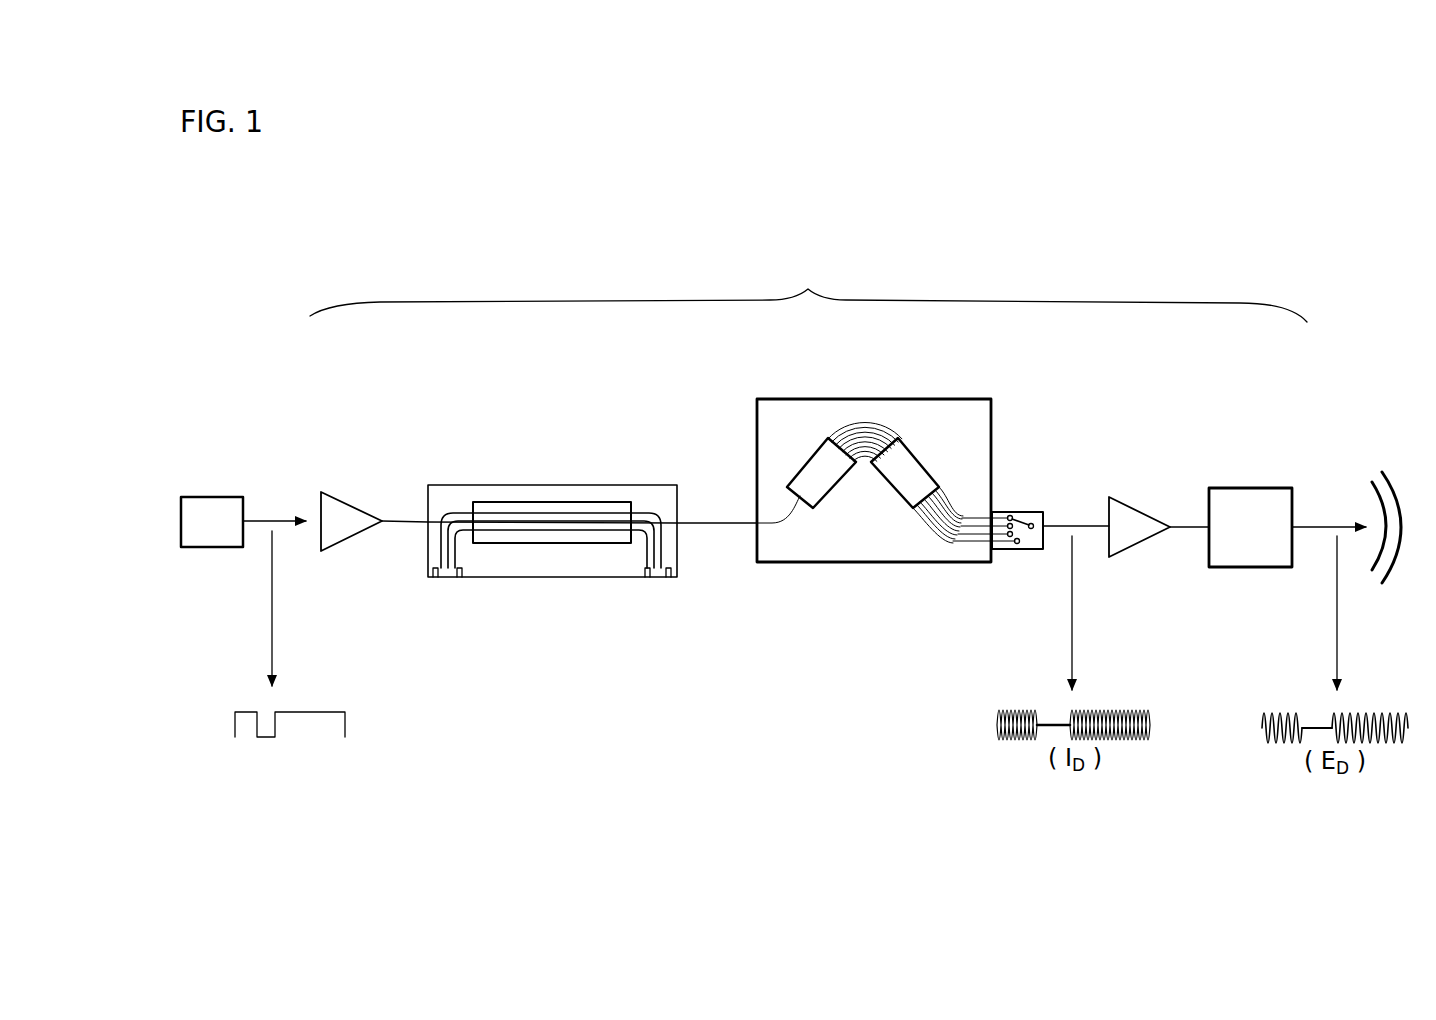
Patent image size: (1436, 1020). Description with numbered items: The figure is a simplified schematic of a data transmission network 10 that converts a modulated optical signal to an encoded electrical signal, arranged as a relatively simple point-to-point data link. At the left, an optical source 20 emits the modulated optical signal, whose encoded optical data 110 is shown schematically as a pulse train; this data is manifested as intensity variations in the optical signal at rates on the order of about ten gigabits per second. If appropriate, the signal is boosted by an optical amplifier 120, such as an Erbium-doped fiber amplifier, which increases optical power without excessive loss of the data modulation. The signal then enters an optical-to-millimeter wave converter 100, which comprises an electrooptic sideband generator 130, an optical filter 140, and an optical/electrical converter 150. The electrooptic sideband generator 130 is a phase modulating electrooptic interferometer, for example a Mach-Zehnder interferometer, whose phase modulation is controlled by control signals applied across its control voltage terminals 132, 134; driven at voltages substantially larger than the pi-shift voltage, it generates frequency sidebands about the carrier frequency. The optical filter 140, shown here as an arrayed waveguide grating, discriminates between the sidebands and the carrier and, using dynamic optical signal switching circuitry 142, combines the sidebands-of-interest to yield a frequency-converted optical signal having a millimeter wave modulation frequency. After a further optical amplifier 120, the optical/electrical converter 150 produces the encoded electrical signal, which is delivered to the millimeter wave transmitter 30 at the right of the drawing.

The data transmission network 10 is at (1293, 232).
The optical source 20 is at (205, 496).
The millimeter wave transmitter 30 is at (1383, 471).
The optical-to-millimeter wave converter 100 is at (808, 289).
The encoded optical data 110 is at (345, 722).
The optical amplifier 120 is at (352, 540).
The electrooptic sideband generator 130 is at (540, 578).
The control voltage terminal 132 is at (443, 590).
The control voltage terminal 134 is at (650, 590).
The optical filter 140 is at (900, 399).
The dynamic optical signal switching circuitry 142 is at (1017, 550).
The optical/electrical converter 150 is at (1250, 568).